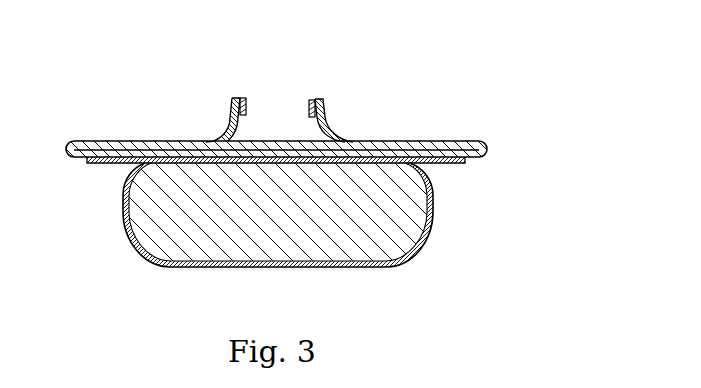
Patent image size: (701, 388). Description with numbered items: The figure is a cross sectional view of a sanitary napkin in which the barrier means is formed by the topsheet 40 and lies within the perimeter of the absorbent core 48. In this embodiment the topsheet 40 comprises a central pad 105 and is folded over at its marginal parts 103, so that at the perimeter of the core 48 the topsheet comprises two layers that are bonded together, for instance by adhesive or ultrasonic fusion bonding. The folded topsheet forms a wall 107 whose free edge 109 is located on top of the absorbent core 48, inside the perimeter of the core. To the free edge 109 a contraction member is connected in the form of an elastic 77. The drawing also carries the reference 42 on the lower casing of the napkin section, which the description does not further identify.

The marginal parts 103 is at (433, 142).
The central pad 105 is at (245, 151).
The wall 107 is at (229, 121).
The elastic 77 is at (246, 98).
The topsheet 40 is at (327, 130).
The free edge 109 is at (322, 101).
The cell casing 42 is at (388, 263).
The absorbent core 48 is at (398, 195).